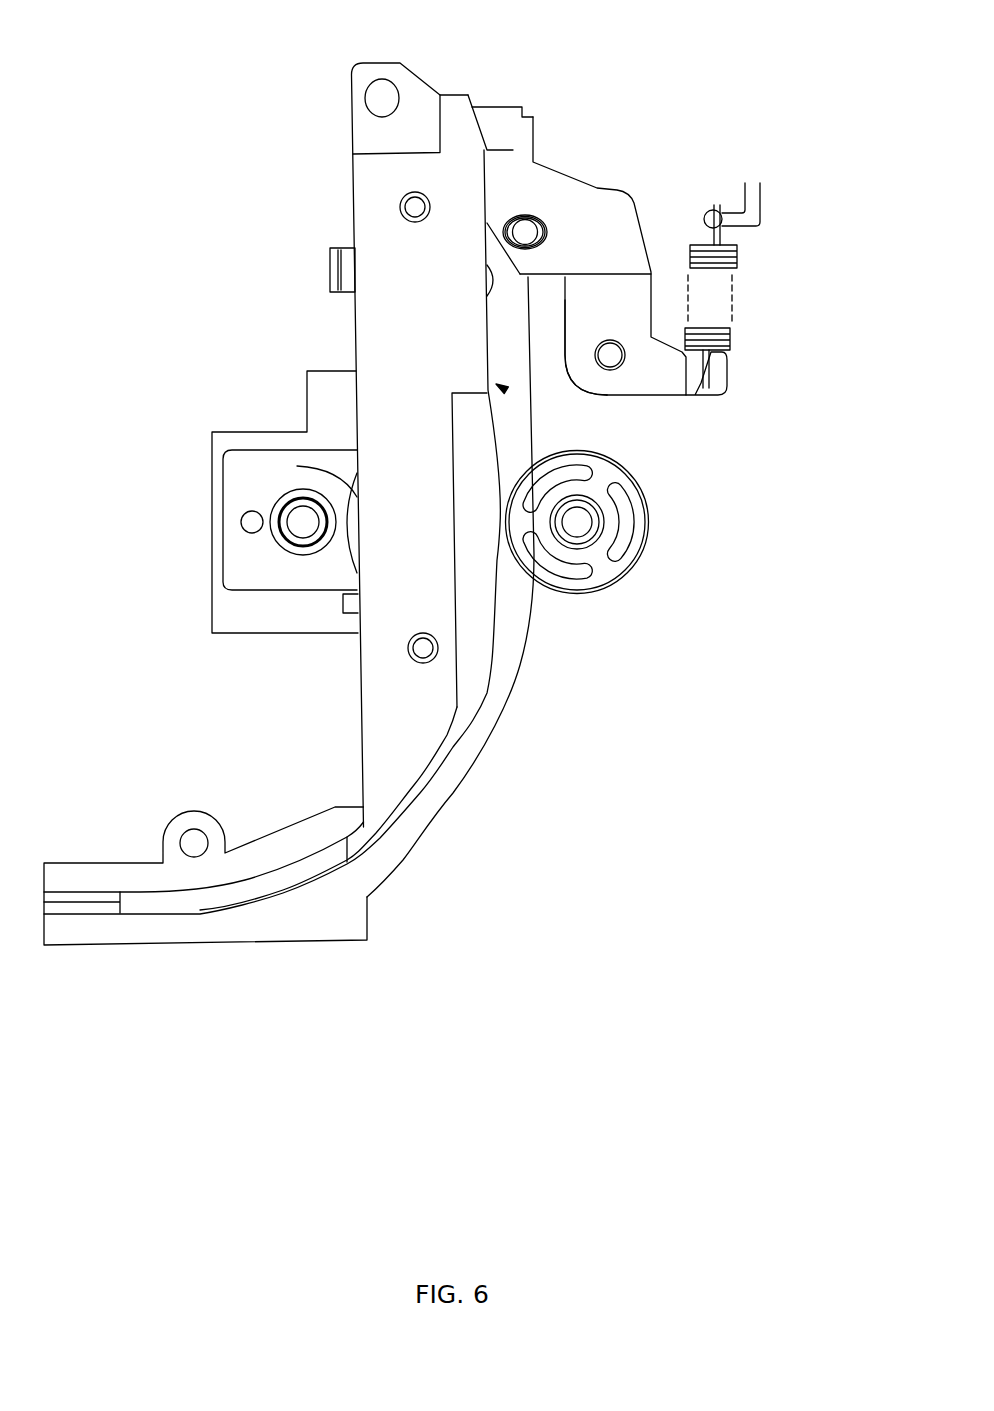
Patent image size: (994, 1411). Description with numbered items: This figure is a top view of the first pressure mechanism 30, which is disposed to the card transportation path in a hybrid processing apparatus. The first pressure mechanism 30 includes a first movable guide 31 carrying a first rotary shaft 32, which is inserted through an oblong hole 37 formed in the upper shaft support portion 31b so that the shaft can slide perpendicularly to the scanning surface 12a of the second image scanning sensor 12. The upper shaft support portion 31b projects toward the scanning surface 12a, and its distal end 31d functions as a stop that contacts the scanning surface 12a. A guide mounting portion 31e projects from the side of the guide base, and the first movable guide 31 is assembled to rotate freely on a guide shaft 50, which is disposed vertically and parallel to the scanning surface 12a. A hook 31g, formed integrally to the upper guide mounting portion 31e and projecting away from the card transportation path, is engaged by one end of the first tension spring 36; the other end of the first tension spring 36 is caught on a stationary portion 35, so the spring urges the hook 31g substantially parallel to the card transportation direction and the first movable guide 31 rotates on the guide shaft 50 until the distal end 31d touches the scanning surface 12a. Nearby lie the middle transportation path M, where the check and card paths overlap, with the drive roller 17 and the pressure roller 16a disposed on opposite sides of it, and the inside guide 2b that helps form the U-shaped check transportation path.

The second image scanning sensor 12 is at (289, 488).
The scanning surface 12a is at (487, 268).
The drive roller 17 is at (297, 466).
The inside guide 2b is at (133, 900).
The pressure roller 16a is at (650, 548).
The middle transportation path M is at (497, 385).
The first pressure mechanism 30 is at (645, 170).
The first movable guide 31 is at (640, 232).
The upper shaft support portion 31b is at (513, 181).
The distal end 31d is at (487, 232).
The guide mounting portion 31e is at (565, 350).
The hook 31g is at (720, 386).
The first rotary shaft 32 is at (525, 222).
The oblong hole 37 is at (545, 217).
The guide shaft 50 is at (612, 358).
The first tension spring 36 is at (735, 298).
The stationary portion 35 is at (760, 208).